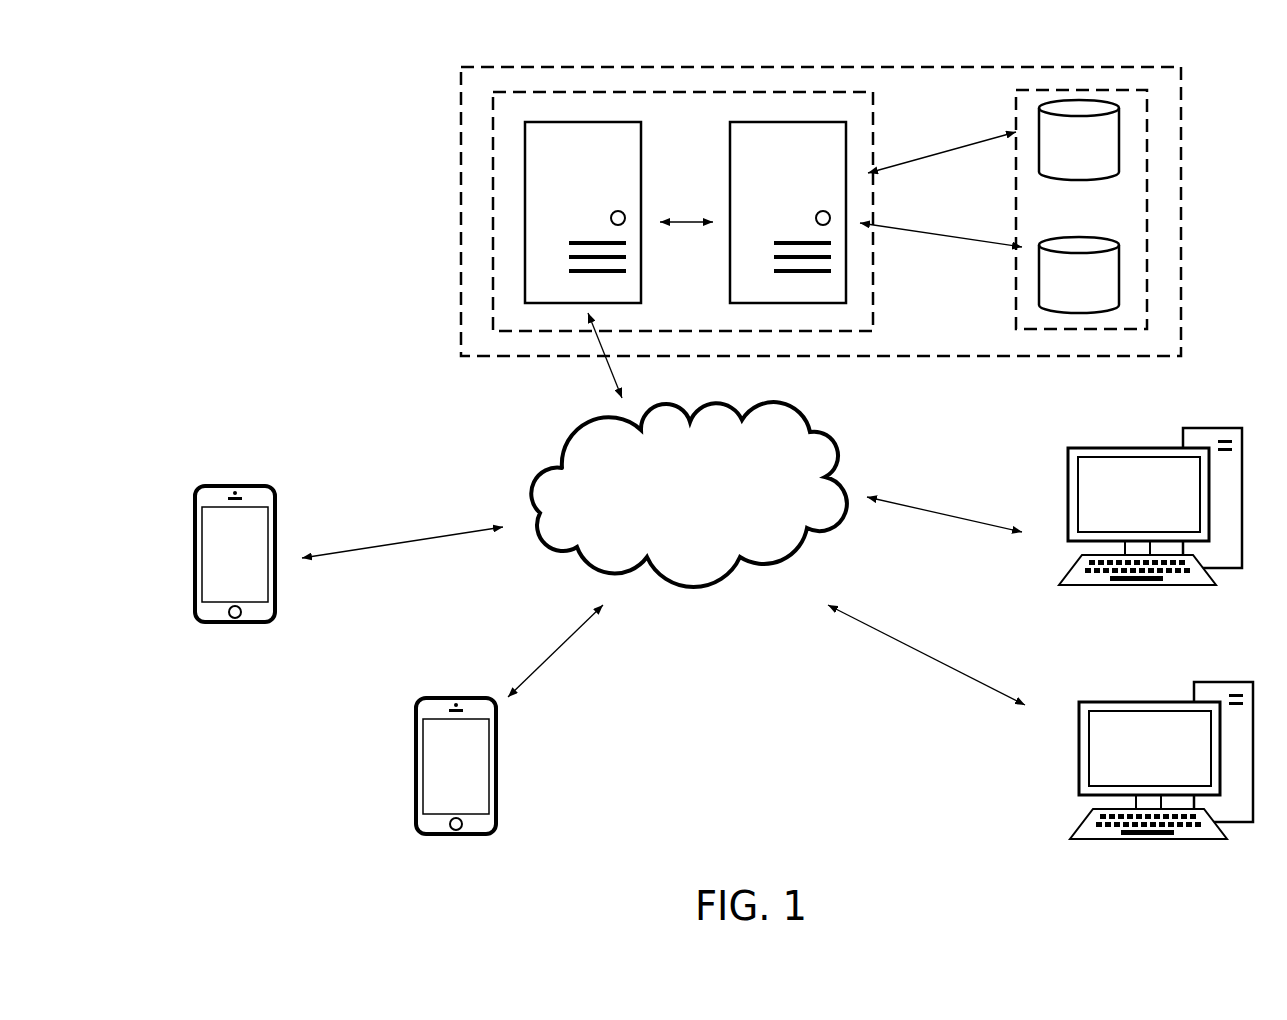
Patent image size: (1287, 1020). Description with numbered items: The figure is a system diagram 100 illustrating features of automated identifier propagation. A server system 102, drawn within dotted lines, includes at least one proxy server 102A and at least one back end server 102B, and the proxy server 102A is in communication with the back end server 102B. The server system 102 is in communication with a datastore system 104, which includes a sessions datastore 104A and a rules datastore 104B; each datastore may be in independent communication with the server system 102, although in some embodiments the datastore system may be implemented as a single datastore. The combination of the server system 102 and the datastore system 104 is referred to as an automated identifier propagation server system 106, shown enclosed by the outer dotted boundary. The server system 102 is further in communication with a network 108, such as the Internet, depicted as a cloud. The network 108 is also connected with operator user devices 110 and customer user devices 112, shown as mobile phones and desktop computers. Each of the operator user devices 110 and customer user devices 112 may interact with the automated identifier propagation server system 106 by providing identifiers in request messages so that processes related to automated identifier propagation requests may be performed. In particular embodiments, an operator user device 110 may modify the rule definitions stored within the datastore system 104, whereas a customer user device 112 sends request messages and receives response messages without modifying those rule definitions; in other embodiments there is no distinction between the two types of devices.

The system diagram 100 is at (175, 146).
The server system 102 is at (493, 152).
The proxy server 102A is at (556, 177).
The back end server 102B is at (761, 177).
The datastore system 104 is at (1016, 120).
The sessions datastore 104A is at (1053, 154).
The rules datastore 104B is at (1053, 287).
The automated identifier propagation server system 106 is at (461, 312).
The network 108 is at (669, 502).
The operator user devices 110 is at (193, 497).
The customer user devices 112 is at (415, 712).